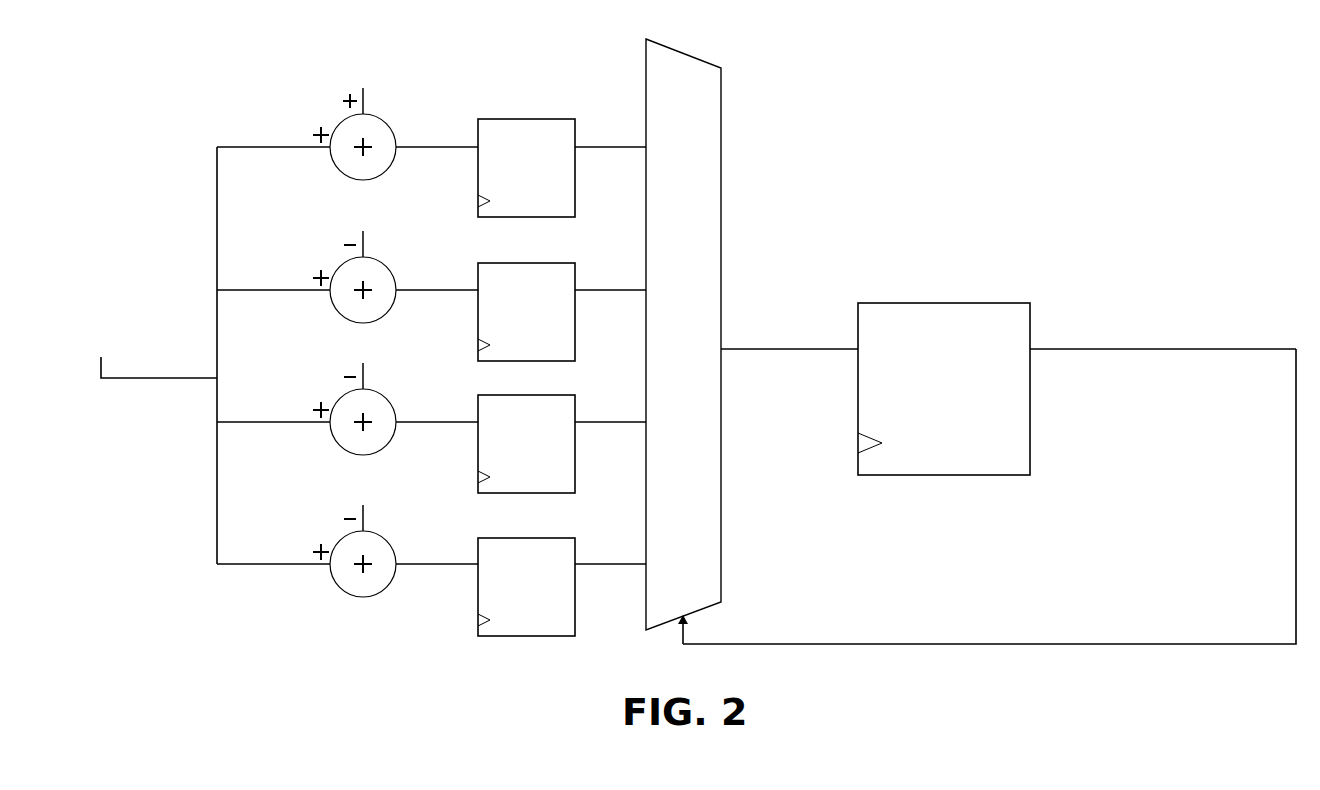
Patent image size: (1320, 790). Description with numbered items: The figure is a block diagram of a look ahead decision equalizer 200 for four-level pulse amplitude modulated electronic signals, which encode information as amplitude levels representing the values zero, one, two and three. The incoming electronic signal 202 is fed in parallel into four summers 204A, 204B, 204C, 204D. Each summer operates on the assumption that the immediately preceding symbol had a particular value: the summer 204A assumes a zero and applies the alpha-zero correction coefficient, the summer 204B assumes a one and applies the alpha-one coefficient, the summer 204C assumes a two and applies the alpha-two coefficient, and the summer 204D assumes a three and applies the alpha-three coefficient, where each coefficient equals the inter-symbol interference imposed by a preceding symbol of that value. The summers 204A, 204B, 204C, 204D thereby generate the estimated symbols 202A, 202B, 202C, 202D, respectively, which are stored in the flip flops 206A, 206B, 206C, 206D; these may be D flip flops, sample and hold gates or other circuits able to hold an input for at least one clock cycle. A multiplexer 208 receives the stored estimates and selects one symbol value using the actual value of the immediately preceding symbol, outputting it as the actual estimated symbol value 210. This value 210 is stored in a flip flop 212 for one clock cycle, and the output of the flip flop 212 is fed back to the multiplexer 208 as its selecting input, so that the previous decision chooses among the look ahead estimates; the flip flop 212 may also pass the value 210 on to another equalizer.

The look ahead decision equalizer 200 is at (200, 116).
The PAM-4 electronic signal 202 is at (152, 350).
The symbol 202A is at (437, 131).
The symbol 202B is at (437, 274).
The symbol 202C is at (437, 406).
The symbol 202D is at (437, 549).
The summer 204A is at (395, 115).
The summer 204B is at (397, 263).
The summer 204C is at (394, 392).
The summer 204D is at (396, 535).
The flip flop 206A is at (568, 117).
The flip flop 206B is at (580, 255).
The flip flop 206C is at (583, 392).
The flip flop 206D is at (575, 535).
The multiplexer 208 is at (701, 55).
The actual estimated symbol value 210 is at (789, 328).
The flip flop 212 is at (1027, 287).